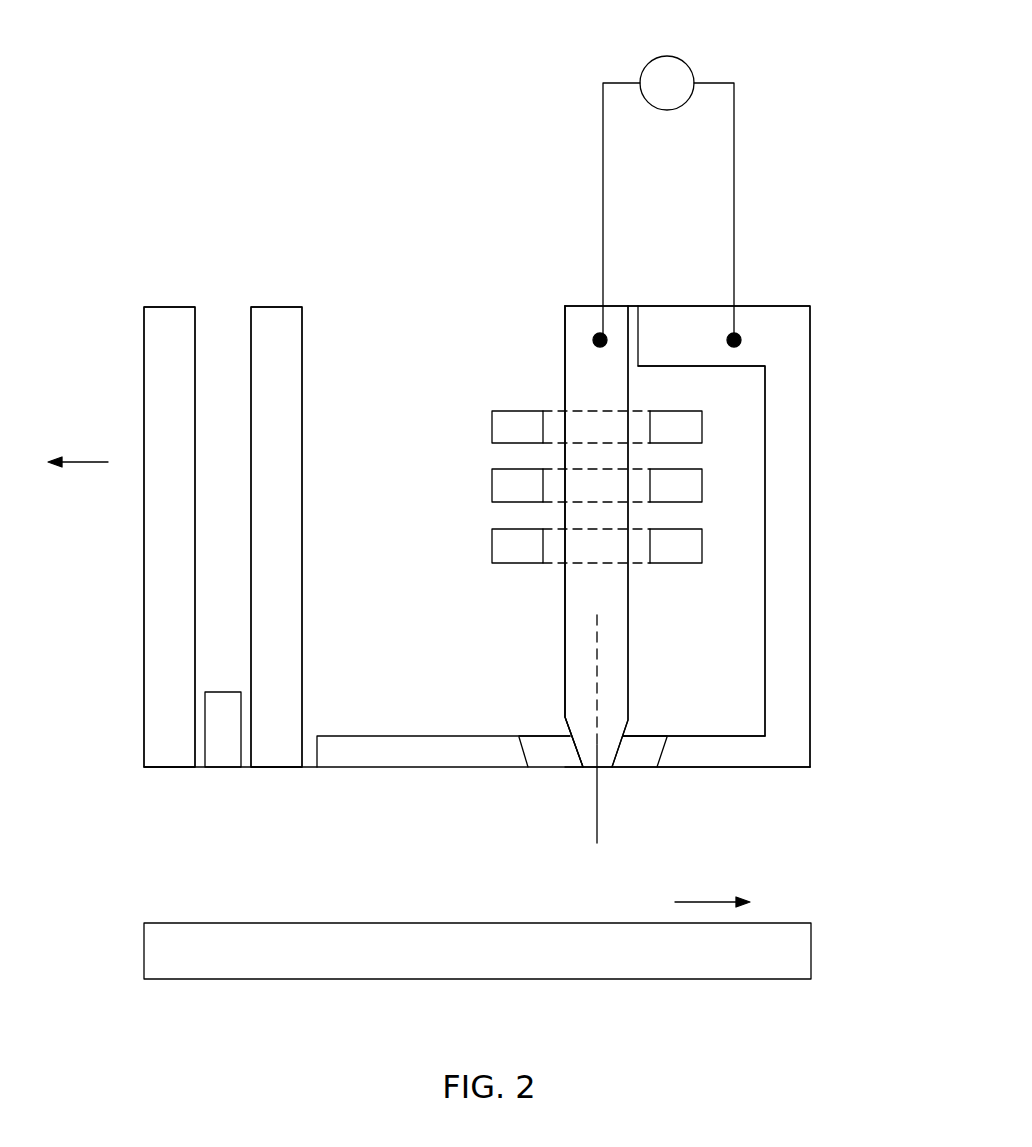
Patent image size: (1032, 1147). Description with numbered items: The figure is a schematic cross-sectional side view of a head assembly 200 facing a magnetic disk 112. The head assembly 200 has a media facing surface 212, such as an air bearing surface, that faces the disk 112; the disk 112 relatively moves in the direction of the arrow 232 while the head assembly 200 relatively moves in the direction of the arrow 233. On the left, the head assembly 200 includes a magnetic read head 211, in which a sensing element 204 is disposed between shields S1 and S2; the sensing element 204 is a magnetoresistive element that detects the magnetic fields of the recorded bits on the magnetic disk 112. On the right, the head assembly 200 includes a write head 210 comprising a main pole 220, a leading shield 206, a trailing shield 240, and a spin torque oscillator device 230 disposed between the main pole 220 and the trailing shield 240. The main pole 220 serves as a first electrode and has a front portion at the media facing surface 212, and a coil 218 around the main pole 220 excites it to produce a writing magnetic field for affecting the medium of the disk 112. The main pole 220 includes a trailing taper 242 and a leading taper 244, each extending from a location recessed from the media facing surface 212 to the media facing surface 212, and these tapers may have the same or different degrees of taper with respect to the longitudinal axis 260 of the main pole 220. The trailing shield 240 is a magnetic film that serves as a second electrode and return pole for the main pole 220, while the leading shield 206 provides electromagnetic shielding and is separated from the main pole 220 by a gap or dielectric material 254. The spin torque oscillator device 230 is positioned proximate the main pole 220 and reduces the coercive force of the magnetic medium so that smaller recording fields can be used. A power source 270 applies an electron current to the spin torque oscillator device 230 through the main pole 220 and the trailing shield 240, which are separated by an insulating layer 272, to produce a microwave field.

The head assembly 200 is at (172, 128).
The magnetic read head 211 is at (141, 255).
The write head 210 is at (815, 255).
The shield S1 is at (163, 753).
The shield S2 is at (276, 753).
The sensing element 204 is at (221, 765).
The leading shield 206 is at (355, 768).
The trailing shield 240 is at (780, 752).
The main pole 220 is at (612, 598).
The insulating layer 272 is at (640, 333).
The trailing taper 242 is at (629, 694).
The leading taper 244 is at (567, 722).
The power source 270 is at (688, 62).
The coil 218 is at (512, 565).
The longitudinal axis 260 is at (597, 836).
The gap or dielectric material 254 is at (557, 752).
The spin torque oscillator device 230 is at (628, 748).
The media facing surface 212 is at (685, 769).
The arrow 233 is at (95, 460).
The arrow 232 is at (703, 901).
The magnetic disk 112 is at (812, 948).